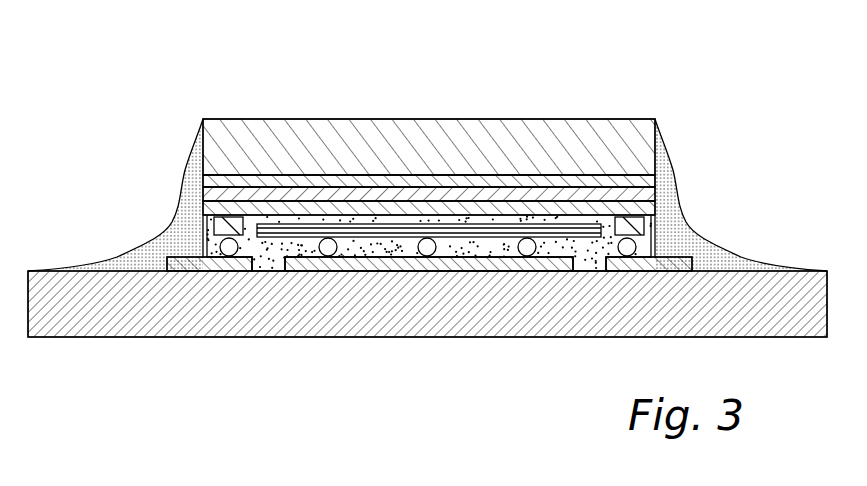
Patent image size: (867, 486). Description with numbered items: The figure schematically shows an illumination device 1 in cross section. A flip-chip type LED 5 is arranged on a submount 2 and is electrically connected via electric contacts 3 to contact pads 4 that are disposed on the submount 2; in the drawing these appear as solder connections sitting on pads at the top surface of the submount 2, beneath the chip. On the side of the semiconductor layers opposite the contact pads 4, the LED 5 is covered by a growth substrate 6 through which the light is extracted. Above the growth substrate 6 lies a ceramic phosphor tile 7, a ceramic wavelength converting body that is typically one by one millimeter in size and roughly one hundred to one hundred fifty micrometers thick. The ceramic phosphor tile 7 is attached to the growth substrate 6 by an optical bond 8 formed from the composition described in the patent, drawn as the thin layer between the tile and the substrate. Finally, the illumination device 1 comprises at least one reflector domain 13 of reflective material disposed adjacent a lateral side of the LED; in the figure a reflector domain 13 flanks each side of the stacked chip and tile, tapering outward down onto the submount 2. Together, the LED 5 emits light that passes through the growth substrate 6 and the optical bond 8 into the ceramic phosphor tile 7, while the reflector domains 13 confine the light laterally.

The illumination device 1 is at (137, 78).
The submount 2 is at (153, 323).
The electric contacts 3 is at (225, 256).
The contact pads 4 is at (400, 266).
The flip-chip type LED 5 is at (650, 212).
The growth substrate 6 is at (212, 195).
The ceramic phosphor tile 7 is at (648, 140).
The optical bond 8 is at (655, 182).
The reflector domain 13 is at (147, 253).